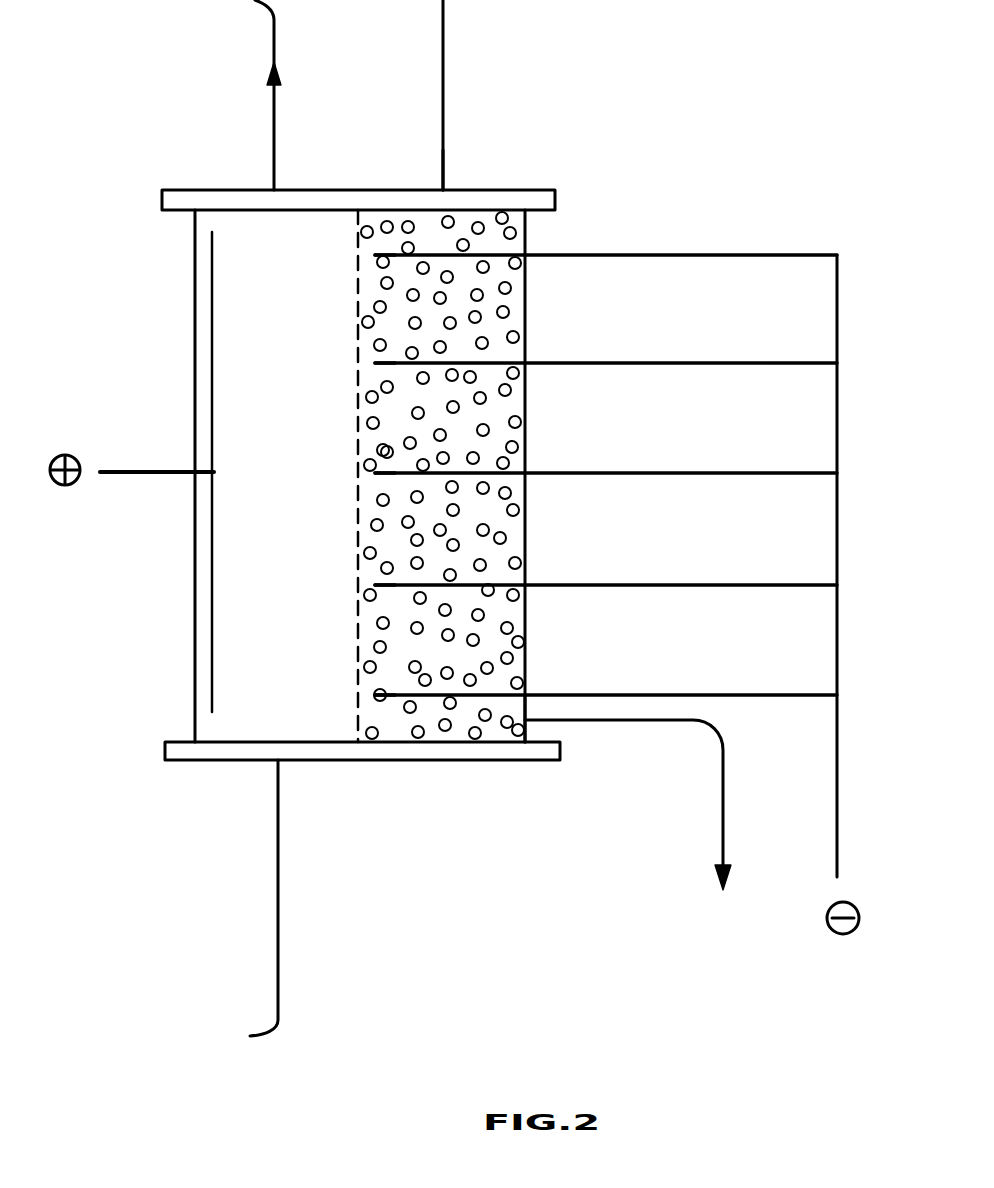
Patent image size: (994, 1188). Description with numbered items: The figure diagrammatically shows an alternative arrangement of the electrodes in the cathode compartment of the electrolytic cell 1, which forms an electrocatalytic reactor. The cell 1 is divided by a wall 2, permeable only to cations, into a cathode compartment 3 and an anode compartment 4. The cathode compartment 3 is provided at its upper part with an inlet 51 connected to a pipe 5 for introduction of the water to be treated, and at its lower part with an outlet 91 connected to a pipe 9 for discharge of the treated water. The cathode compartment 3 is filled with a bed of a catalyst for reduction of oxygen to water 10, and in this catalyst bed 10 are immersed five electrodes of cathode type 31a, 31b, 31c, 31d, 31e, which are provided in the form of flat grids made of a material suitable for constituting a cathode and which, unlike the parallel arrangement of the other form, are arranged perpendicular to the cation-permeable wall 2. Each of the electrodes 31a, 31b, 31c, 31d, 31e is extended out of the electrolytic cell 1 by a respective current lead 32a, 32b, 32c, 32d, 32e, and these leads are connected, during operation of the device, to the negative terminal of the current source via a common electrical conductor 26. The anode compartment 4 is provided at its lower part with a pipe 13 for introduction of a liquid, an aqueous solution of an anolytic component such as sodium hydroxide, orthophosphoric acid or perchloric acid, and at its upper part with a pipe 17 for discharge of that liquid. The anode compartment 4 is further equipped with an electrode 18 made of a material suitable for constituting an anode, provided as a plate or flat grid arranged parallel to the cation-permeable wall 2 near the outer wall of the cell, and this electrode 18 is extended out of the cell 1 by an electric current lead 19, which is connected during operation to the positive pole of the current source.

The electrolytic cell 1 is at (553, 166).
The cation-permeable wall 2 is at (357, 256).
The cathode compartment 3 is at (397, 747).
The anode compartment 4 is at (247, 357).
The pipe for introduction of water to be treated 5 is at (445, 82).
The pipe for discharge of treated water 9 is at (722, 833).
The catalyst bed 10 is at (460, 748).
The pipe for introduction of liquid to the anode compartment 13 is at (277, 907).
The pipe for discharge of liquid from the anode compartment 17 is at (273, 135).
The anode electrode 18 is at (210, 640).
The electric current lead 19 is at (165, 467).
The common electrical conductor 26 is at (848, 858).
The cathode-type electrode 31a is at (397, 693).
The cathode-type electrode 31b is at (397, 587).
The cathode-type electrode 31c is at (400, 477).
The cathode-type electrode 31d is at (423, 377).
The cathode-type electrode 31e is at (392, 263).
The current lead 32a is at (727, 692).
The current lead 32b is at (720, 583).
The current lead 32c is at (733, 471).
The current lead 32d is at (720, 362).
The current lead 32e is at (733, 252).
The inlet 51 is at (445, 187).
The outlet 91 is at (547, 690).